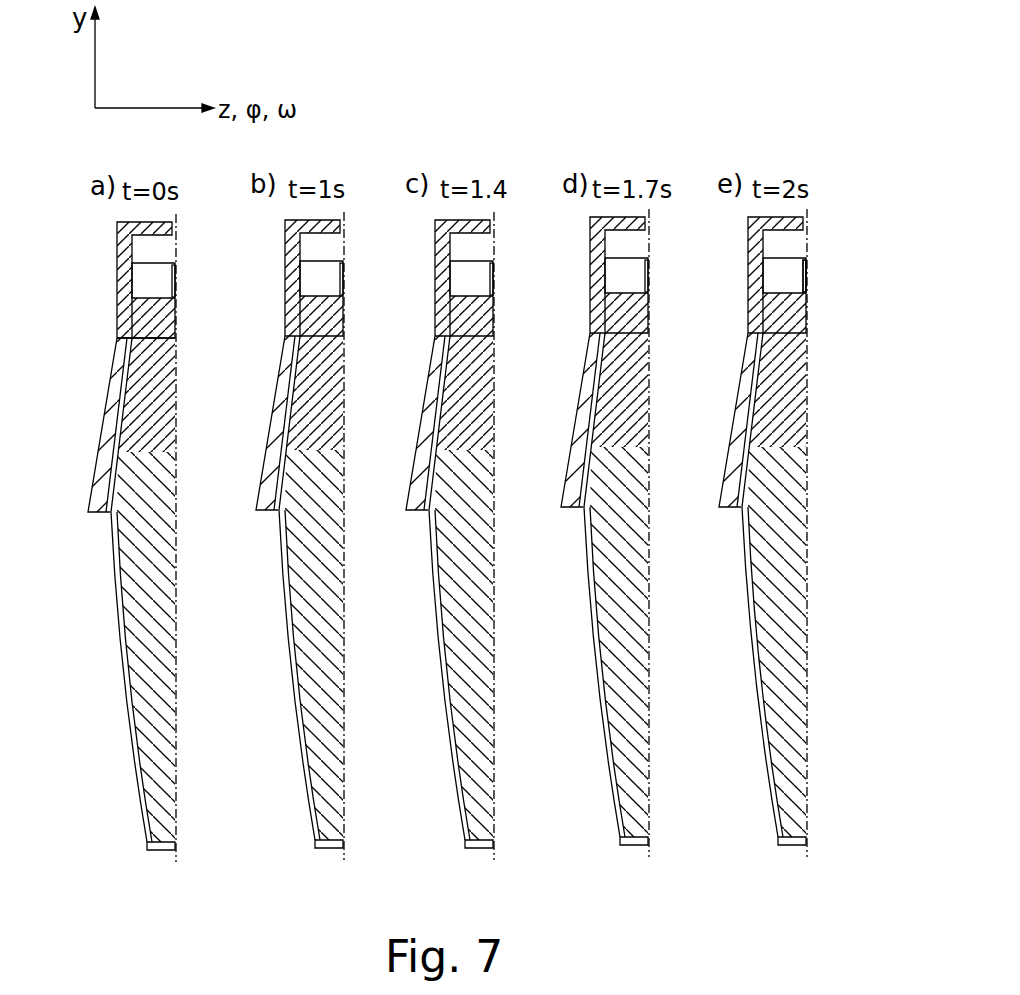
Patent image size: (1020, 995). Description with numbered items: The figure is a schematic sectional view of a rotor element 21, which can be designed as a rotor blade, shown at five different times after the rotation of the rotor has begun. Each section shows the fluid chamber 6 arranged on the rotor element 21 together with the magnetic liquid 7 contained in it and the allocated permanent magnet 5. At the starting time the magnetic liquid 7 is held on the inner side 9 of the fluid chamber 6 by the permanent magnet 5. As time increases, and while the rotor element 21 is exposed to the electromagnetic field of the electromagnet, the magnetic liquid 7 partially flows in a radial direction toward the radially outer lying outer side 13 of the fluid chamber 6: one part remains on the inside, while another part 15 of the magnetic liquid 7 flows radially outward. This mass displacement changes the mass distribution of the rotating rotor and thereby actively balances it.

The permanent magnet 5 is at (809, 272).
The fluid chamber 6 is at (790, 483).
The magnetic liquid 7 is at (142, 448).
The inner side 9 is at (124, 340).
The outer side 13 is at (146, 843).
The part of the magnetic liquid 15 is at (808, 842).
The rotor element 21 is at (117, 252).